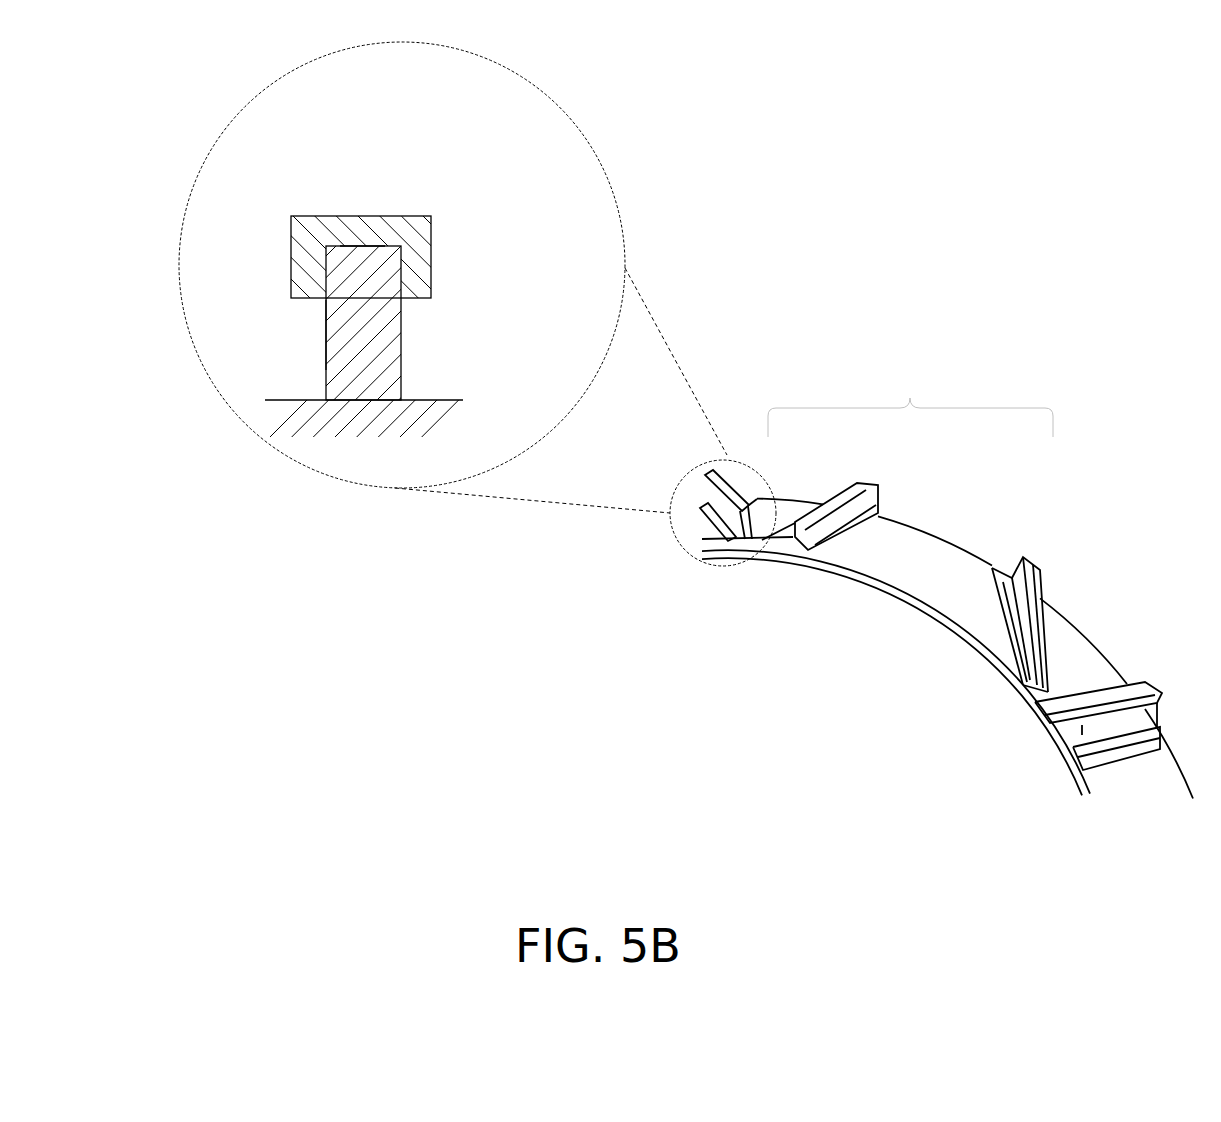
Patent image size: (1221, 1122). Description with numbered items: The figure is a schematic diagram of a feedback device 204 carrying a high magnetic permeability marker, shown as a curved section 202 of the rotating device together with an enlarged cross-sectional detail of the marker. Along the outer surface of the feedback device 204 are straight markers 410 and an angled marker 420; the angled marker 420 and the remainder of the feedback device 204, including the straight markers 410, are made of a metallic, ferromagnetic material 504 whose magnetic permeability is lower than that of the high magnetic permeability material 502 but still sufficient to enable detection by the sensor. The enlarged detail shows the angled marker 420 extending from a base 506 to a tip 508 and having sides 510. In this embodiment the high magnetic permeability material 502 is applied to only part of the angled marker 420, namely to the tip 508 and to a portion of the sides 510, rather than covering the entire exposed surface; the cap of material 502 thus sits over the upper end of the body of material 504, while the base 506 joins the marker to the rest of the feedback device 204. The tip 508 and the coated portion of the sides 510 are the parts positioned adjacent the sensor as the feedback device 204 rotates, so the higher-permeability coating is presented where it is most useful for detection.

The shell section 202 is at (910, 398).
The feedback device 204 is at (938, 567).
The straight markers 410 is at (855, 503).
The angled marker 420 is at (607, 147).
The high magnetic permeability material 502 is at (420, 220).
The metallic material 504 is at (377, 376).
The base 506 is at (373, 398).
The tip 508 is at (361, 247).
The sides 510 is at (326, 334).